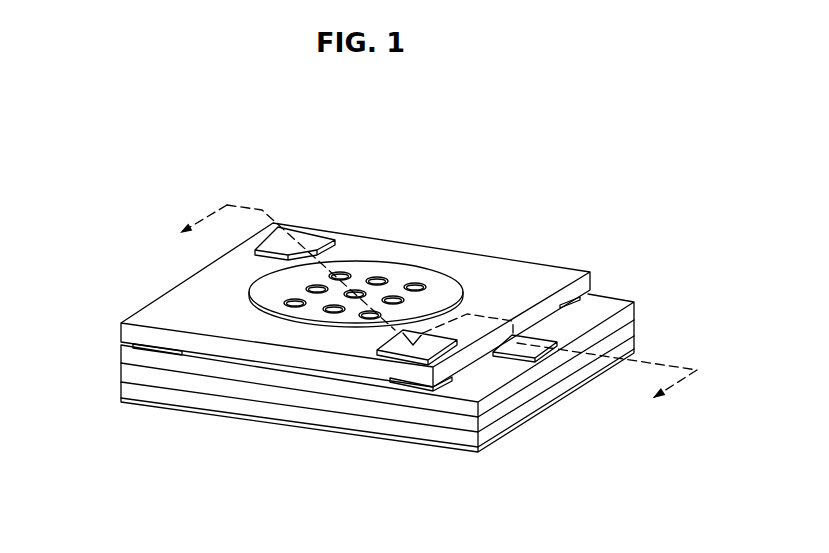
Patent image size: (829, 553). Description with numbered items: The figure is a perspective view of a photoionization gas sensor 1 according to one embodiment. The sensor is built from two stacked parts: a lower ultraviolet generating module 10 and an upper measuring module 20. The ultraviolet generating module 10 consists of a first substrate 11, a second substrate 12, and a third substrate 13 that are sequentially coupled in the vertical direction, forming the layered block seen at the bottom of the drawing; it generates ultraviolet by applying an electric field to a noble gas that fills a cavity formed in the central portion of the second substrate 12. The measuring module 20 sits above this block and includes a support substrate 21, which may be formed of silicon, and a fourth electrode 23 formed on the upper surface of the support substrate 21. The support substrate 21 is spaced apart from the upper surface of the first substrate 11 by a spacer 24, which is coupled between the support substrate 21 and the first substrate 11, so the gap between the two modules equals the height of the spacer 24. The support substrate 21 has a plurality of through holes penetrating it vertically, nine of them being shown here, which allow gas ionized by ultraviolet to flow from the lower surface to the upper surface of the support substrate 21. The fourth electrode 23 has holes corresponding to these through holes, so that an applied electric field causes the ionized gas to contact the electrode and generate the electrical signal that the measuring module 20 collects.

The photoionization gas sensor 1 is at (230, 168).
The ultraviolet generating module 10 is at (288, 489).
The first substrate 11 is at (198, 368).
The second substrate 12 is at (247, 392).
The third substrate 13 is at (297, 410).
The measuring module 20 is at (110, 342).
The support substrate 21 is at (180, 303).
The fourth electrode 23 is at (402, 276).
The spacer 24 is at (145, 347).